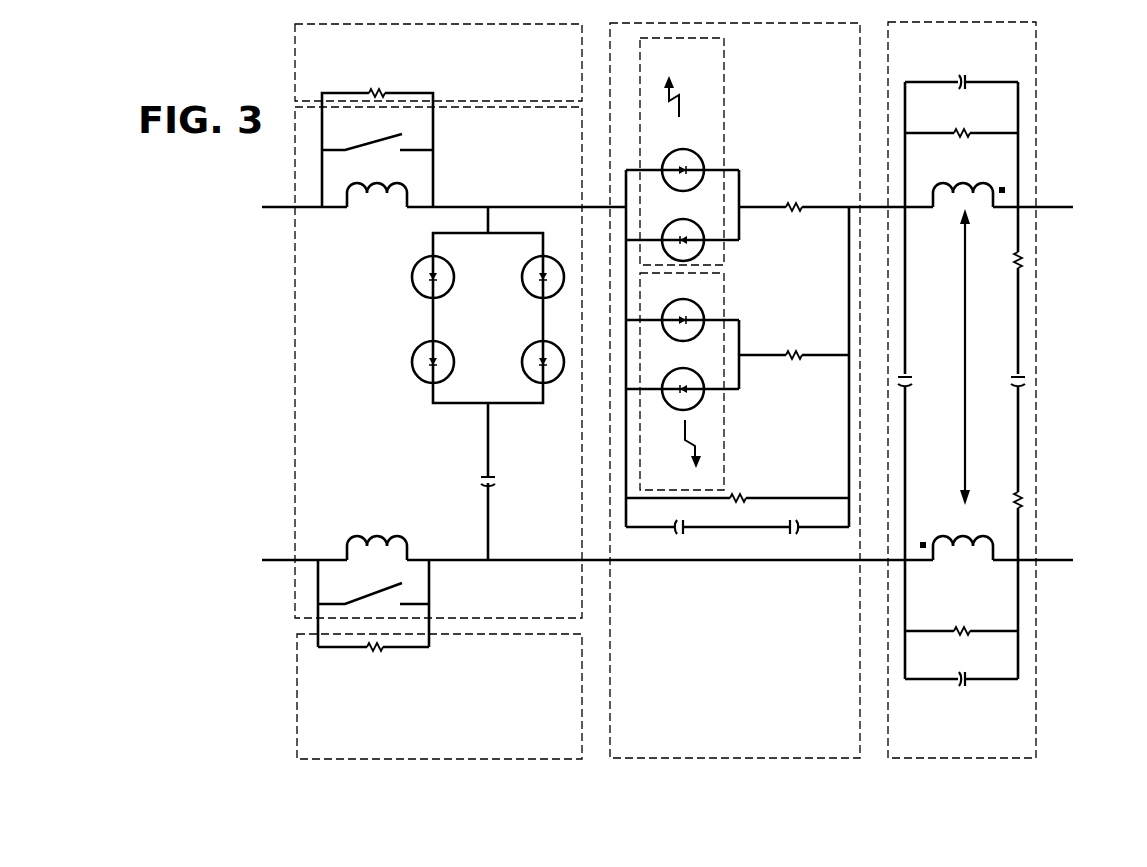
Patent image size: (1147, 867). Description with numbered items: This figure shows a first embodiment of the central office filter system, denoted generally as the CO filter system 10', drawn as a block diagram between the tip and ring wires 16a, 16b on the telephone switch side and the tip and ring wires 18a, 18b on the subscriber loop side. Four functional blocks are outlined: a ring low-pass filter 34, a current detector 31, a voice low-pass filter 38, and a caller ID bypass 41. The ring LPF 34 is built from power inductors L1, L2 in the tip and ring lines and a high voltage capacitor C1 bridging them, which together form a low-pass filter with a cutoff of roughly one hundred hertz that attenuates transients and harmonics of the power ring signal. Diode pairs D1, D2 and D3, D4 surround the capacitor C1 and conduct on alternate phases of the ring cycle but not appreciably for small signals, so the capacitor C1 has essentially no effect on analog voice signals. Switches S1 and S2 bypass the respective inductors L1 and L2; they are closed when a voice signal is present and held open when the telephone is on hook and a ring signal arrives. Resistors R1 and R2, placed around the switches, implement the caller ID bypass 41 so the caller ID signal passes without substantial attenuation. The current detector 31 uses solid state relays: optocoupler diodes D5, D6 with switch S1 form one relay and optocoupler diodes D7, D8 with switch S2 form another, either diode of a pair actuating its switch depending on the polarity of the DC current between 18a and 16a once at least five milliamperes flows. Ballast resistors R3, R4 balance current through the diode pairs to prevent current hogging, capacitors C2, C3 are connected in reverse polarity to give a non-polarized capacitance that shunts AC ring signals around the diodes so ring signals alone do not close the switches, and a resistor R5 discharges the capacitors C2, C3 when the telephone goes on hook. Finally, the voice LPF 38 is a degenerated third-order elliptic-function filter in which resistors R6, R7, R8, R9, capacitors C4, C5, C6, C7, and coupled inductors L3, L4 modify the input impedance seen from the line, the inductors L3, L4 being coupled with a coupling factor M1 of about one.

The CO filter system 10' is at (266, 114).
The tip wire of connection 16 16a is at (413, 236).
The ring wire of connection 16 16b is at (568, 530).
The tip wire of connection 18 18a is at (1048, 245).
The ring wire of connection 18 18b is at (1059, 516).
The caller ID bypass 41 is at (470, 750).
The ring low-pass filter 34 is at (367, 481).
The current detector 31 is at (728, 750).
The voice low-pass filter 38 is at (1010, 756).
The resistor R1 is at (377, 139).
The resistor R2 is at (373, 656).
The ballast resistor R3 is at (836, 197).
The ballast resistor R4 is at (794, 346).
The resistor R5 is at (737, 486).
The resistor R6 is at (961, 118).
The resistor R7 is at (961, 616).
The resistor R8 is at (1003, 262).
The resistor R9 is at (1003, 497).
The switch S1 is at (500, 98).
The switch S2 is at (514, 533).
The power inductor L1 is at (377, 184).
The power inductor L2 is at (377, 538).
The coupled inductor L3 is at (969, 183).
The coupled inductor L4 is at (956, 537).
The high voltage capacitor C1 is at (507, 488).
The capacitor C2 is at (665, 525).
The capacitor C3 is at (766, 525).
The capacitor C4 is at (921, 382).
The capacitor C5 is at (1001, 382).
The capacitor C6 is at (961, 66).
The capacitor C7 is at (961, 666).
The diode D1 is at (529, 362).
The diode D2 is at (529, 277).
The diode D3 is at (416, 362).
The diode D4 is at (416, 277).
The optocoupler diode D5 is at (683, 156).
The optocoupler diode D6 is at (683, 228).
The optocoupler diode D7 is at (683, 306).
The optocoupler diode D8 is at (683, 377).
The coupling factor M1 is at (979, 357).